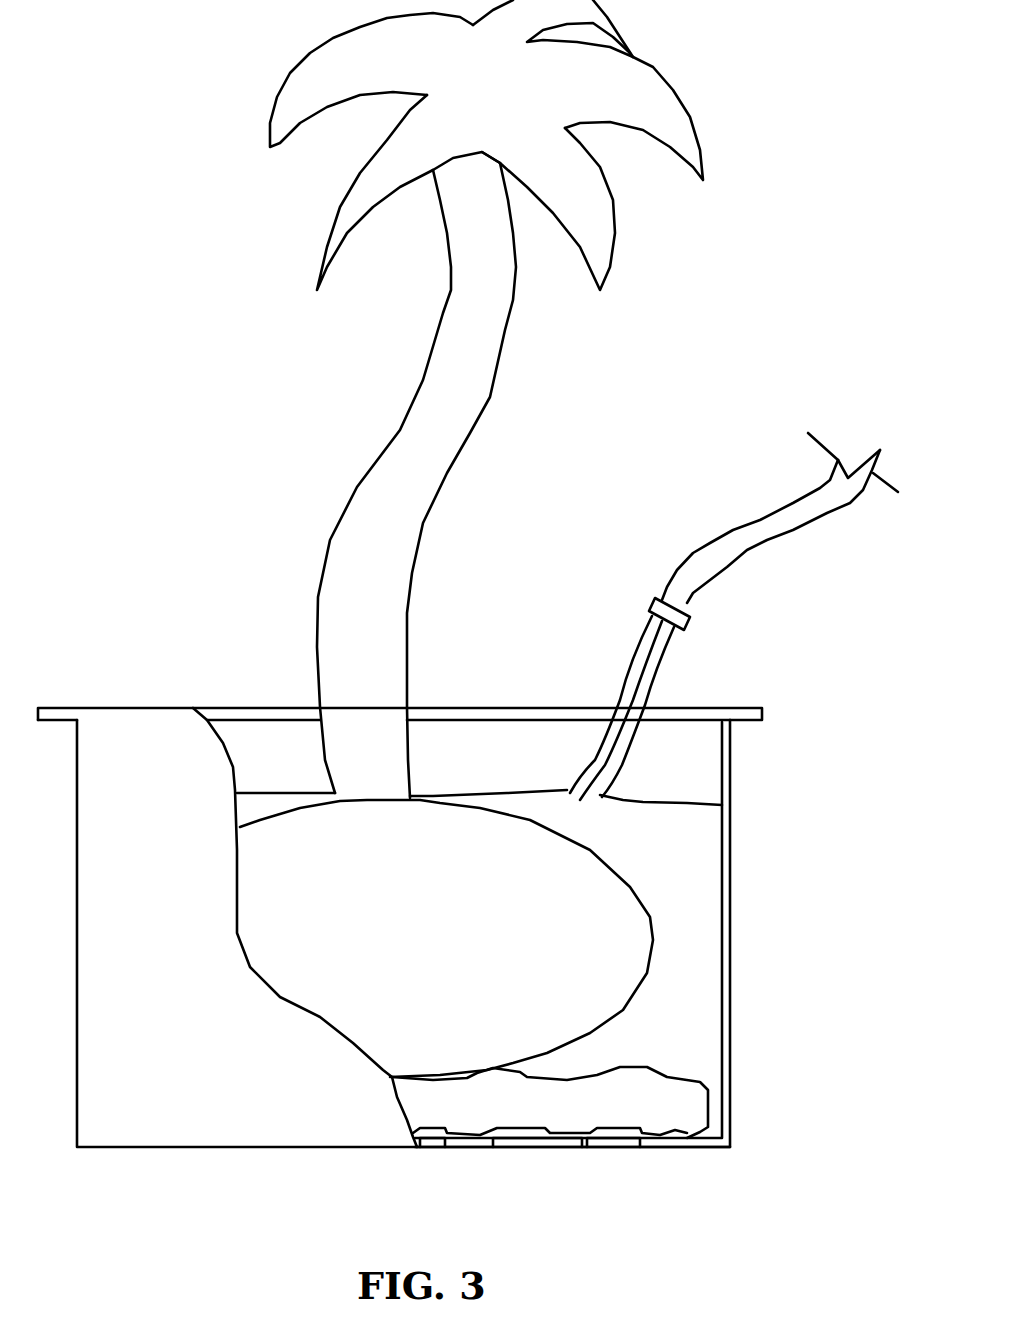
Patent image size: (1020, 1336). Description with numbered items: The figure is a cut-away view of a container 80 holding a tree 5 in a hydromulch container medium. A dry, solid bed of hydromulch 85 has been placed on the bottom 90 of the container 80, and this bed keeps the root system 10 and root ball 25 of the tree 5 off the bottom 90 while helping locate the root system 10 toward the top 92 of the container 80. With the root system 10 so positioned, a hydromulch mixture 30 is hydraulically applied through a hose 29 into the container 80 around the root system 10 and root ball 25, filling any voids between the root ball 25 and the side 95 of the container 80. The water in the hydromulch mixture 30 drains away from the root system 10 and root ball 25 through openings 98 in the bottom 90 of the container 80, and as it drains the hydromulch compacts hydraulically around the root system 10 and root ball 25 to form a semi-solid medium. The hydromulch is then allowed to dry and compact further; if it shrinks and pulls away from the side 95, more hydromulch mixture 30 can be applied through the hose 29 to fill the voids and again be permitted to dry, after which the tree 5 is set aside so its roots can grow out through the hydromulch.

The tree 5 is at (643, 422).
The root system 10 is at (372, 785).
The root ball 25 is at (653, 955).
The hose 29 is at (757, 538).
The hydromulch mixture 30 is at (653, 670).
The container 80 is at (418, 916).
The bed of hydromulch 85 is at (673, 1110).
The bottom 90 is at (683, 1147).
The top 92 is at (490, 706).
The side 95 is at (728, 927).
The openings 98 is at (602, 1147).